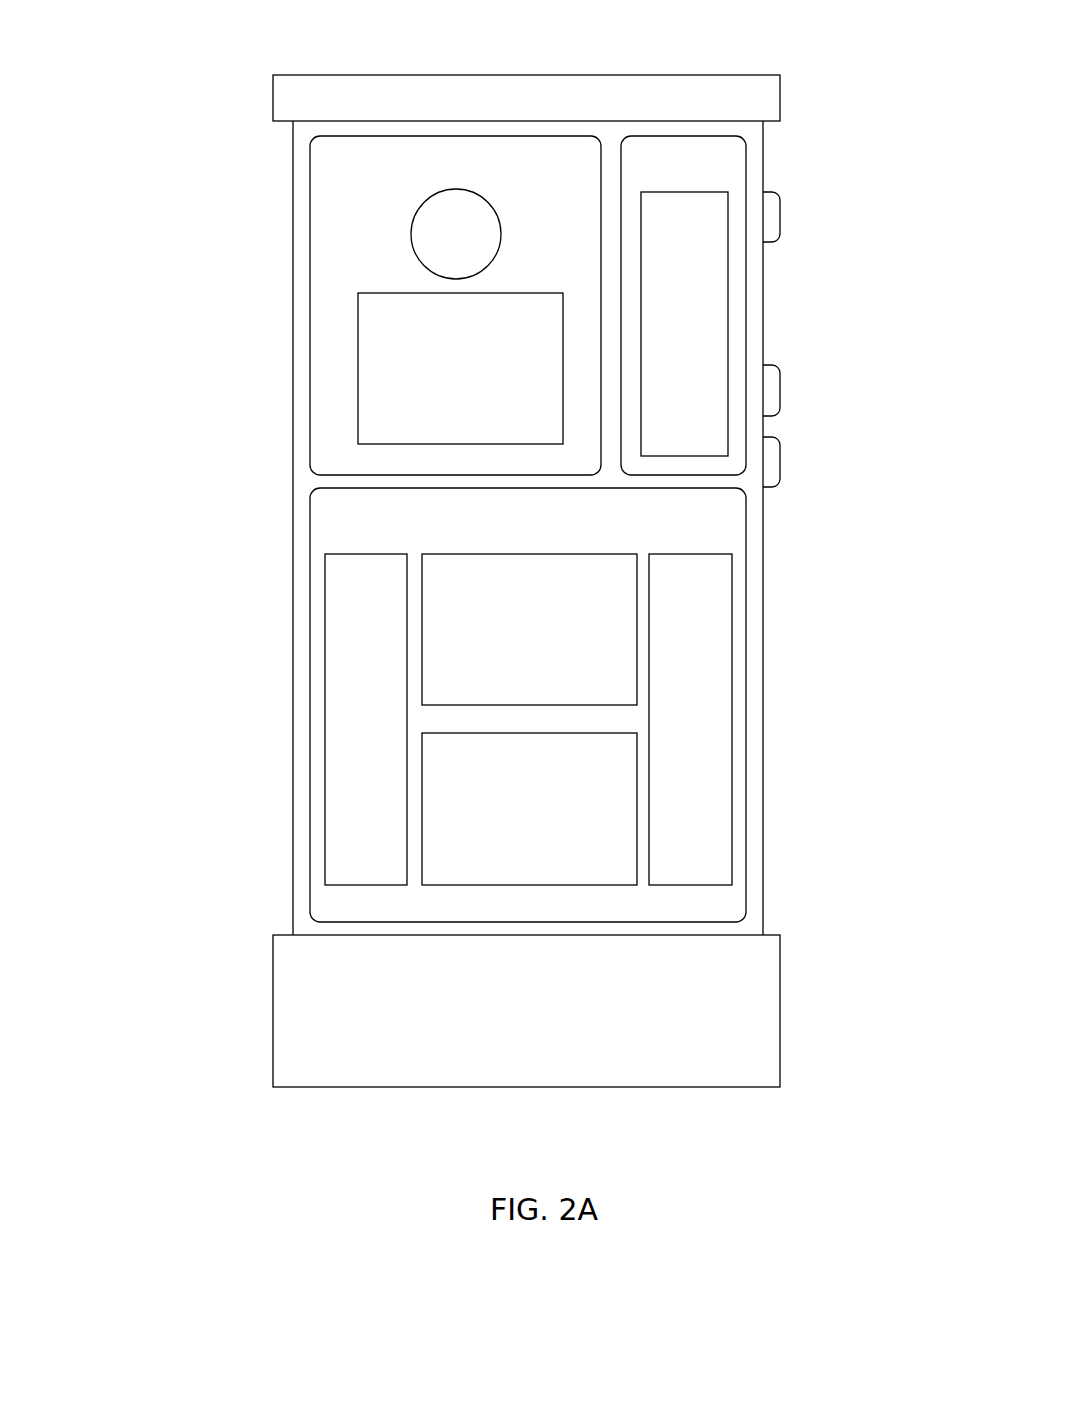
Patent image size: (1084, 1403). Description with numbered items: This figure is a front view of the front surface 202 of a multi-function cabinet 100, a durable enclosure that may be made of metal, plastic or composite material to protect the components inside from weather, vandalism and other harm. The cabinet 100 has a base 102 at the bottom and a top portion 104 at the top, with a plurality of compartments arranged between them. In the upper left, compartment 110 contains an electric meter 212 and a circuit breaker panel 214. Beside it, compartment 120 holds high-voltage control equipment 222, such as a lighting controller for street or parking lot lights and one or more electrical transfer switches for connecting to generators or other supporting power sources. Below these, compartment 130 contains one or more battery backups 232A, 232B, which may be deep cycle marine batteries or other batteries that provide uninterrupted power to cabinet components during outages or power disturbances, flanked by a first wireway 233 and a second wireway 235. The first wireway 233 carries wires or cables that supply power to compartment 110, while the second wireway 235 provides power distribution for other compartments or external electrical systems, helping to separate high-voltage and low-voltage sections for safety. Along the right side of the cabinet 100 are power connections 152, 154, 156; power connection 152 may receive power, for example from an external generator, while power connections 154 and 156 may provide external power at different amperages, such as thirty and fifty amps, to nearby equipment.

The multi-function cabinet 100 is at (193, 47).
The base 102 is at (526, 1011).
The top portion 104 is at (526, 98).
The compartment 110 is at (455, 305).
The compartment 120 is at (683, 305).
The compartment 130 is at (528, 705).
The power connection 152 is at (783, 190).
The power connection 154 is at (783, 365).
The power connection 156 is at (783, 437).
The front surface 202 is at (278, 272).
The electric meter 212 is at (456, 234).
The circuit breaker panel 214 is at (460, 368).
The high-voltage control equipment 222 is at (684, 324).
The battery backup 232A is at (529, 629).
The battery backup 232B is at (529, 809).
The first wireway 233 is at (340, 605).
The second wireway 235 is at (712, 605).